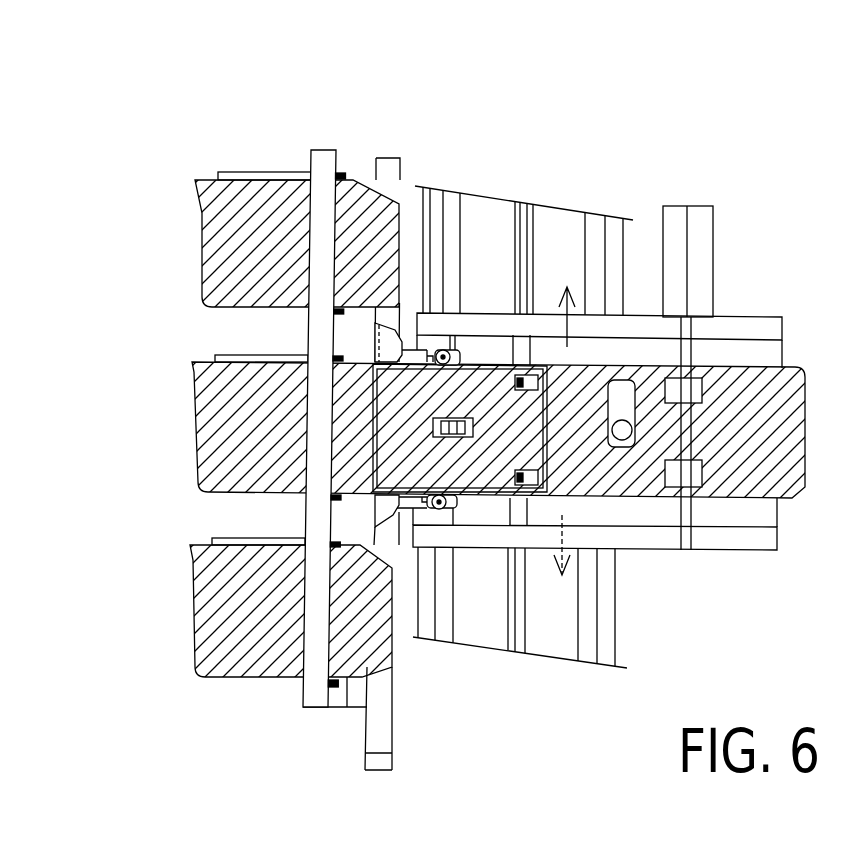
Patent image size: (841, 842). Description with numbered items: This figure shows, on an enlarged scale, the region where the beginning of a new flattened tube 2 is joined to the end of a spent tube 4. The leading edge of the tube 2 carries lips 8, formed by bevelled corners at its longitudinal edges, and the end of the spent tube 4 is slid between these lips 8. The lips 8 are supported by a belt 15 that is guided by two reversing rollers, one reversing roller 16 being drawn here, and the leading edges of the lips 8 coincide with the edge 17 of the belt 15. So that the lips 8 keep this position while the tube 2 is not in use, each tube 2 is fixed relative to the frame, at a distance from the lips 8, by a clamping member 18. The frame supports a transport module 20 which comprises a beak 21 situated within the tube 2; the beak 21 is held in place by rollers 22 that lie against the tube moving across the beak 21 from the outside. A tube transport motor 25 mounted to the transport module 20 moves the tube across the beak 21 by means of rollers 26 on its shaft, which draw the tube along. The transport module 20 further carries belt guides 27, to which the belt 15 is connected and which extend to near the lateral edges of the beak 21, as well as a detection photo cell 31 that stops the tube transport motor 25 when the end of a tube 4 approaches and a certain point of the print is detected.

The tube 2 is at (200, 178).
The spent tube 4 is at (792, 499).
The lips 8 is at (401, 202).
The belt 15 is at (383, 165).
The reversing roller 16 is at (383, 762).
The edge of the belt 17 is at (392, 682).
The clamping member 18 is at (315, 163).
The transport module 20 is at (647, 538).
The beak 21 is at (393, 445).
The rollers 22 is at (440, 517).
The tube transport motor 25 is at (693, 218).
The rollers 26 is at (695, 392).
The belt guides 27 is at (383, 343).
The detection photo cell 31 is at (627, 385).